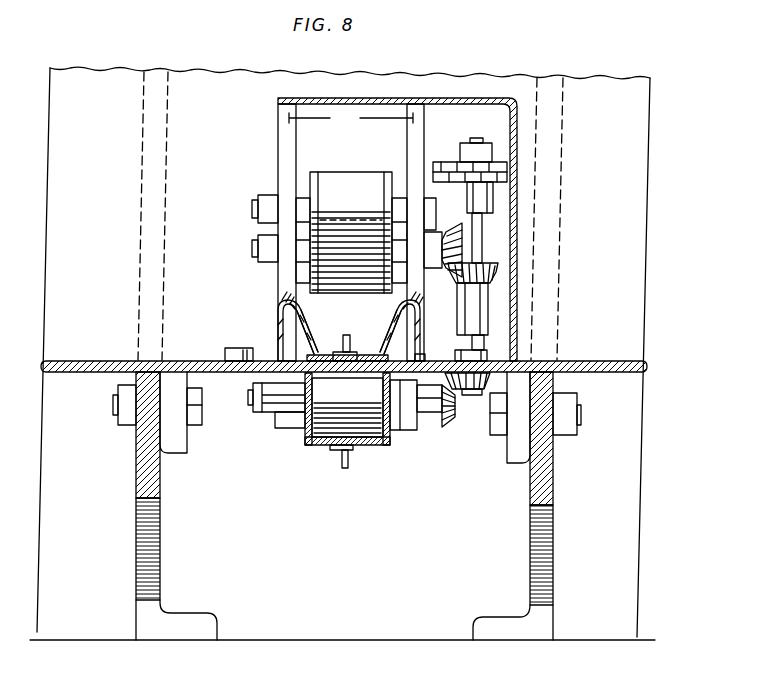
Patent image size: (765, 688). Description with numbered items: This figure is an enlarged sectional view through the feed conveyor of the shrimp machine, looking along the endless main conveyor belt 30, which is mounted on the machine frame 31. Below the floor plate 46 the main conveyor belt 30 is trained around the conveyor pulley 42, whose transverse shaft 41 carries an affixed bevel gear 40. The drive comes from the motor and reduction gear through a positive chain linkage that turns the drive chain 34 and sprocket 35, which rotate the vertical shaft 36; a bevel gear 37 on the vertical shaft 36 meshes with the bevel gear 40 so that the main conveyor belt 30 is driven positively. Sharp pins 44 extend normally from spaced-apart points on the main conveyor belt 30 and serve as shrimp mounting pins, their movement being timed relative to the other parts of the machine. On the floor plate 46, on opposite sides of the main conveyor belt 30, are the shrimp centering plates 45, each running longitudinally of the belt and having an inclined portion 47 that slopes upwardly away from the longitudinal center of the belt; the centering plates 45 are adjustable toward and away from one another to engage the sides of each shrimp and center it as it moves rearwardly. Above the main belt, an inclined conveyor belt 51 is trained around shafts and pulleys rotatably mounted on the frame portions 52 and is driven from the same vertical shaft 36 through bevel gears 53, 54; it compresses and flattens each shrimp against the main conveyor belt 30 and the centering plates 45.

The endless main conveyor belt 30 is at (324, 446).
The machine frame 31 is at (161, 477).
The drive chain 34 is at (437, 166).
The sprocket 35 is at (512, 188).
The vertical shaft 36 is at (476, 222).
The bevel gear 37 is at (488, 382).
The bevel gear 40 is at (452, 422).
The transverse shaft 41 is at (248, 396).
The conveyor pulley 42 is at (366, 402).
The sharp pin 44 is at (347, 336).
The shrimp centering plate 45 is at (278, 320).
The floor plate 46 is at (186, 361).
The inclined portion 47 is at (310, 334).
The inclined conveyor belt 51 is at (350, 172).
The frame portion 52 is at (351, 118).
The bevel gear 53 is at (492, 270).
The bevel gear 54 is at (470, 238).